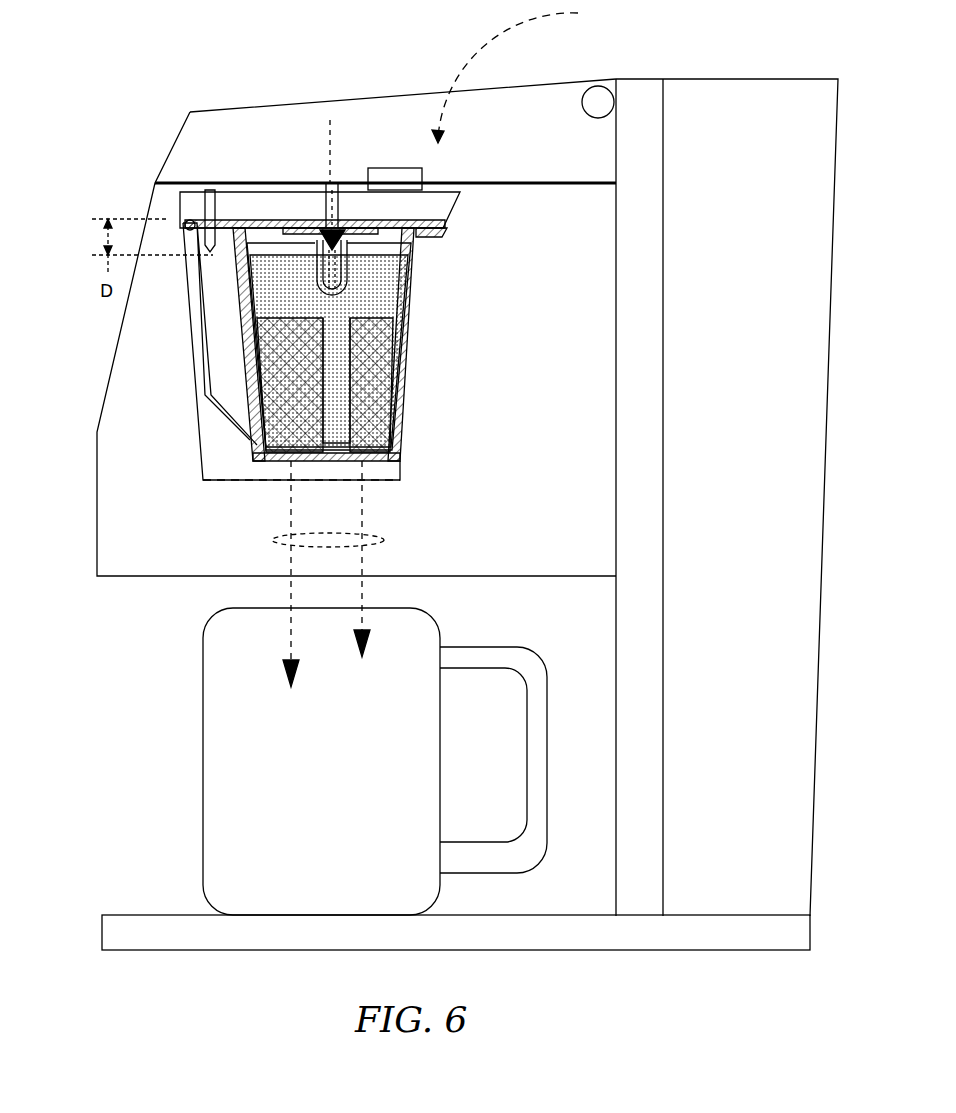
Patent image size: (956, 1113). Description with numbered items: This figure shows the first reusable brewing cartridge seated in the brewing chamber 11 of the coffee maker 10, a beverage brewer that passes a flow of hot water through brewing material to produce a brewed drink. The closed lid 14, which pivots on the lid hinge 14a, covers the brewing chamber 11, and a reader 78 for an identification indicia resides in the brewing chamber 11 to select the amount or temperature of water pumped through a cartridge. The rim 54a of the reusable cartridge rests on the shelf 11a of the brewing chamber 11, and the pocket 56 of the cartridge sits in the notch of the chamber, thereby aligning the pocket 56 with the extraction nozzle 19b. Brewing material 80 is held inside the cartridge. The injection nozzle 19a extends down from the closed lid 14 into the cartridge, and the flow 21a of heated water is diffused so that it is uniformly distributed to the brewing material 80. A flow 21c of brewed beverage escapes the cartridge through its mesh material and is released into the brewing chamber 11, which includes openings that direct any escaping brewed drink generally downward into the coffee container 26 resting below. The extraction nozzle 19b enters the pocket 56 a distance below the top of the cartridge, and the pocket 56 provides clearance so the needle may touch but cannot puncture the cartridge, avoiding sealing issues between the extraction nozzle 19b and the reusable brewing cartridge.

The coffee maker 10 is at (112, 100).
The opening lid 14 is at (516, 154).
The lid hinge 14a is at (598, 95).
The reader 78 is at (392, 166).
The rim 54a is at (425, 236).
The shelf 11a is at (444, 233).
The extraction nozzle 19b is at (204, 205).
The injection nozzle 19a is at (323, 208).
The flow 21a is at (328, 112).
The pocket interior 56 is at (232, 327).
The brewing material 80 is at (285, 301).
The brewing chamber 11 is at (217, 408).
The flow of brewed beverage 21c is at (270, 540).
The coffee container 26 is at (334, 698).